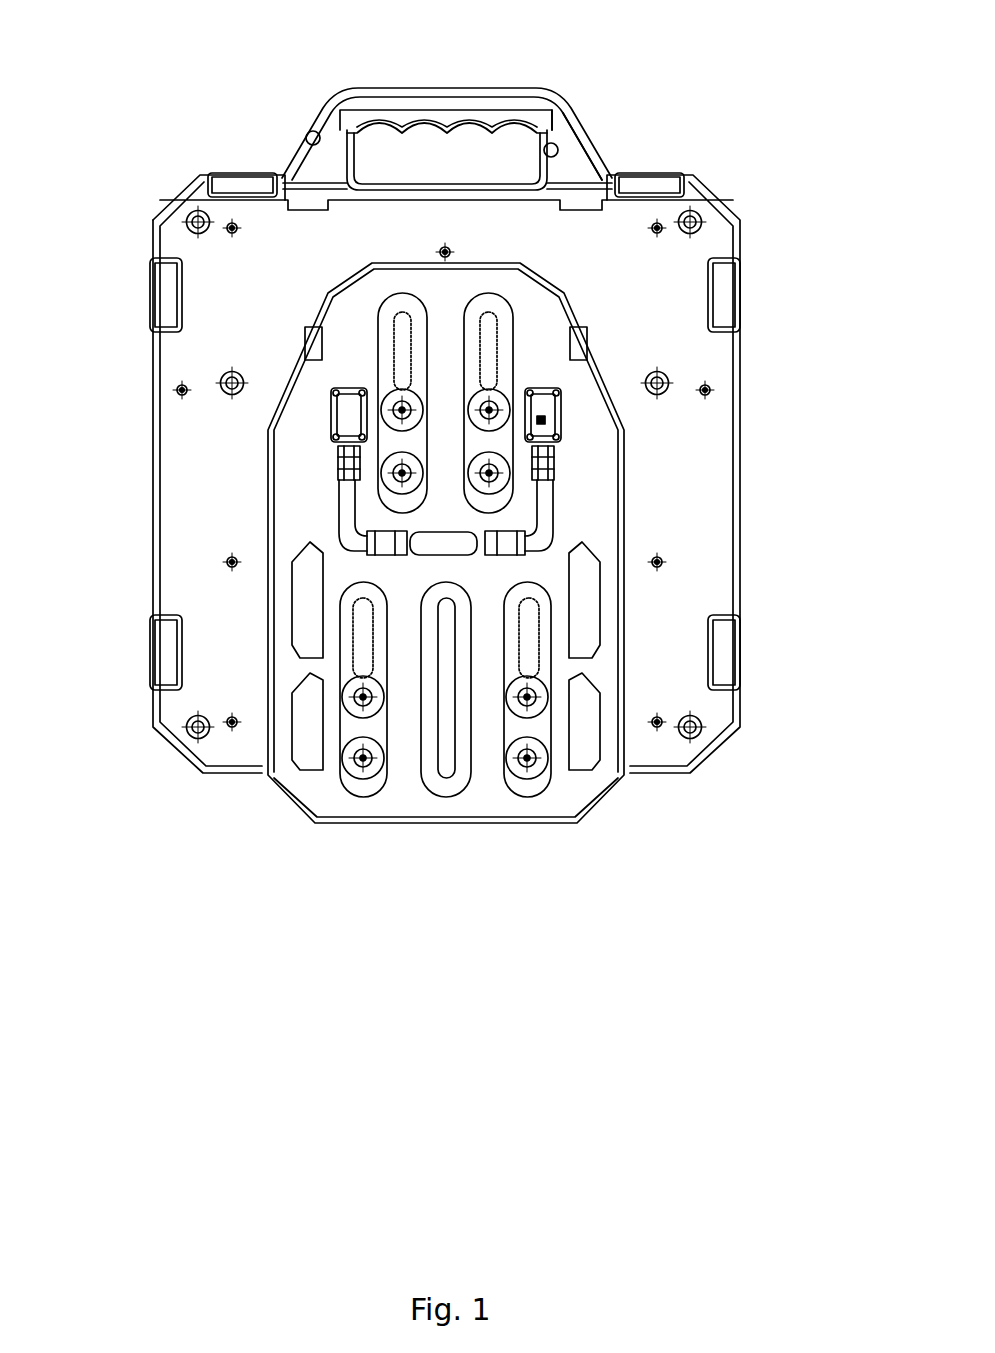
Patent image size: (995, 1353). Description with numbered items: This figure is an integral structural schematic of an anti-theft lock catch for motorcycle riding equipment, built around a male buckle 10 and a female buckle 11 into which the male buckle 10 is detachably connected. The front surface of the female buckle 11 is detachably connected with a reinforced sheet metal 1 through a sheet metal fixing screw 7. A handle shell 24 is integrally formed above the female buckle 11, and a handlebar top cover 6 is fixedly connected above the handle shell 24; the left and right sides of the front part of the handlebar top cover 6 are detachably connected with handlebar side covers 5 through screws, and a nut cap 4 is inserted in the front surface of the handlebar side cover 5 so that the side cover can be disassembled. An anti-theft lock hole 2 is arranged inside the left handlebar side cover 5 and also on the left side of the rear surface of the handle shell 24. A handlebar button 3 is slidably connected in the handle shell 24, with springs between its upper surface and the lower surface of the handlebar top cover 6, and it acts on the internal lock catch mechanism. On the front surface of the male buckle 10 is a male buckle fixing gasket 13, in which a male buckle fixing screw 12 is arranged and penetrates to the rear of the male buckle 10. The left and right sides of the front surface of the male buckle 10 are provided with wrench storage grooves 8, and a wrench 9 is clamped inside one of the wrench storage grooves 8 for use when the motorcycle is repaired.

The reinforced sheet metal 1 is at (185, 480).
The anti-theft lock hole 2 is at (312, 137).
The handlebar button 3 is at (460, 130).
The nut cap 4 is at (556, 148).
The handlebar side cover 5 is at (557, 128).
The handlebar top cover 6 is at (430, 95).
The sheet metal fixing screw 7 is at (182, 390).
The wrench storage groove 8 is at (348, 508).
The wrench 9 is at (542, 430).
The male buckle 10 is at (400, 800).
The female buckle 11 is at (730, 297).
The male buckle fixing screw 12 is at (532, 765).
The male buckle fixing gasket 13 is at (537, 730).
The handle shell 24 is at (378, 115).